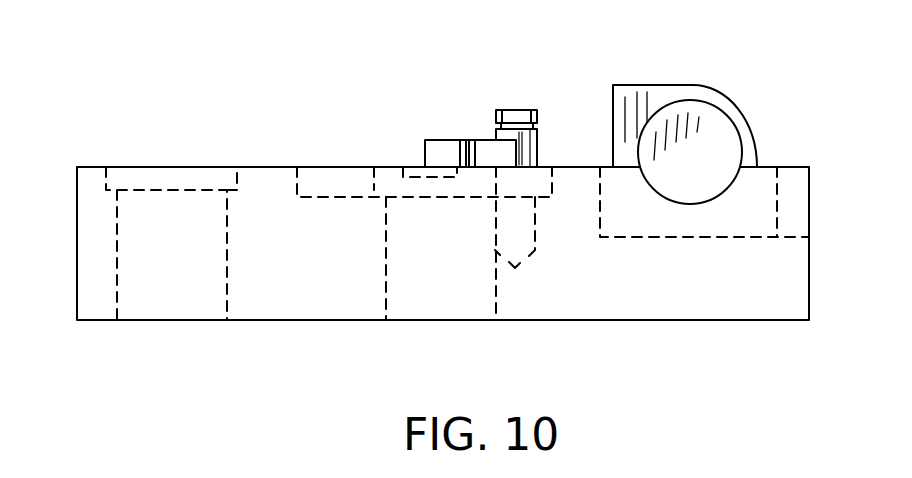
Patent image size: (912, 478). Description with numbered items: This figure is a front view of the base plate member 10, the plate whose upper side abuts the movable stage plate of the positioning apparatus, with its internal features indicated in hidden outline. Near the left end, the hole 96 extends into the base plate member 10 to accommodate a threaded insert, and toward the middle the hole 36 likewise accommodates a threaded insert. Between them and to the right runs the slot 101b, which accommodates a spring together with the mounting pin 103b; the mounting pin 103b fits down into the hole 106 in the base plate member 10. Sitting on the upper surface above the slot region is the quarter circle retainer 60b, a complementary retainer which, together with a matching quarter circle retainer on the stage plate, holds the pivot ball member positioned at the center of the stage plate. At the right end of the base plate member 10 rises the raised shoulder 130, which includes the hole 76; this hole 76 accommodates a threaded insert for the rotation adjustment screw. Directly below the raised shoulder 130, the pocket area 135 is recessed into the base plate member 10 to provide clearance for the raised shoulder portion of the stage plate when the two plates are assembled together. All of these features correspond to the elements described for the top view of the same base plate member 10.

The base plate member 10 is at (808, 275).
The hole 96 is at (117, 244).
The slot 101b is at (350, 197).
The hole 36 is at (386, 287).
The hole 106 is at (528, 255).
The mounting pin 103b is at (513, 110).
The quarter circle retainer 60b is at (448, 140).
The raised shoulder 130 is at (658, 85).
The hole 76 is at (727, 188).
The pocket area 135 is at (678, 238).